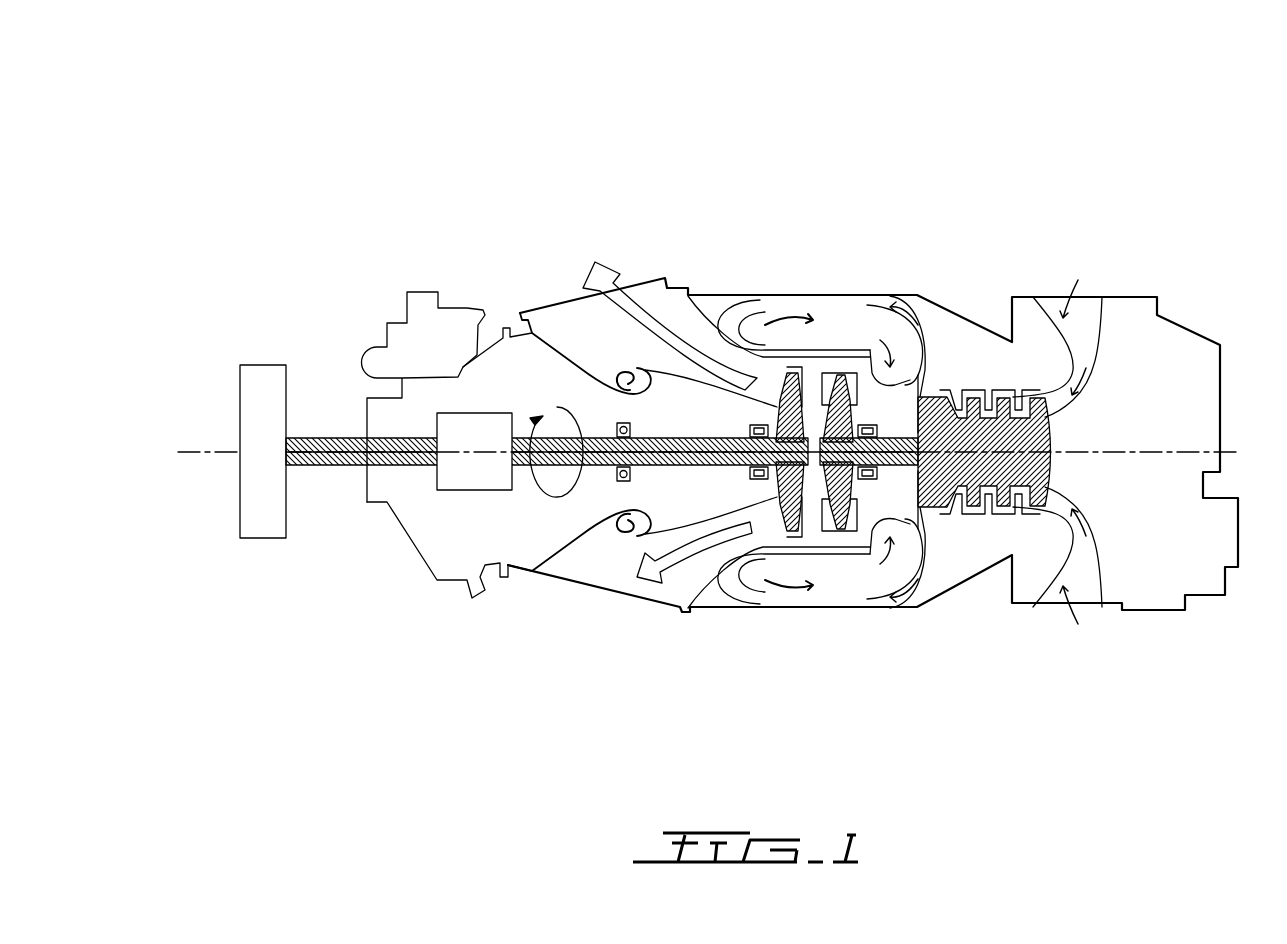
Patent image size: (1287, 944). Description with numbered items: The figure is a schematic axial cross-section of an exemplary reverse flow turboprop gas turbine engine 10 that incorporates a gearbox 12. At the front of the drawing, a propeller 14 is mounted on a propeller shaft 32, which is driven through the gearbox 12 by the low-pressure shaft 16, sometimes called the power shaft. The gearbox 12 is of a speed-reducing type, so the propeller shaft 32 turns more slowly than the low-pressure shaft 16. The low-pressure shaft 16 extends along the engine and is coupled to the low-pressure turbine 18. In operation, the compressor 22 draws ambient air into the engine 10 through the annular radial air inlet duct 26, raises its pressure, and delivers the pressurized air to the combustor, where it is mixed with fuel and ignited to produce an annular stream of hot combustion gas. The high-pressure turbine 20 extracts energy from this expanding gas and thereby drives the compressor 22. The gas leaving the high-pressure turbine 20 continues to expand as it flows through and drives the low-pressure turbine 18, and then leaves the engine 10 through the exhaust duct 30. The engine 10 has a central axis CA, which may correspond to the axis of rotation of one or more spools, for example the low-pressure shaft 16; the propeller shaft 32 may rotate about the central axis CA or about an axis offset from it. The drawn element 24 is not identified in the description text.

The gas turbine engine 10 is at (290, 175).
The gearbox 12 is at (473, 490).
The propeller 14 is at (263, 365).
The low-pressure shaft 16 is at (663, 437).
The low-pressure turbine 18 is at (768, 372).
The high-pressure turbine 20 is at (840, 372).
The compressor 22 is at (960, 417).
The shaft 24 is at (897, 470).
The annular radial air inlet duct 26 is at (1053, 595).
The exhaust duct 30 is at (592, 558).
The propeller shaft 32 is at (330, 466).
The central axis CA is at (1150, 452).